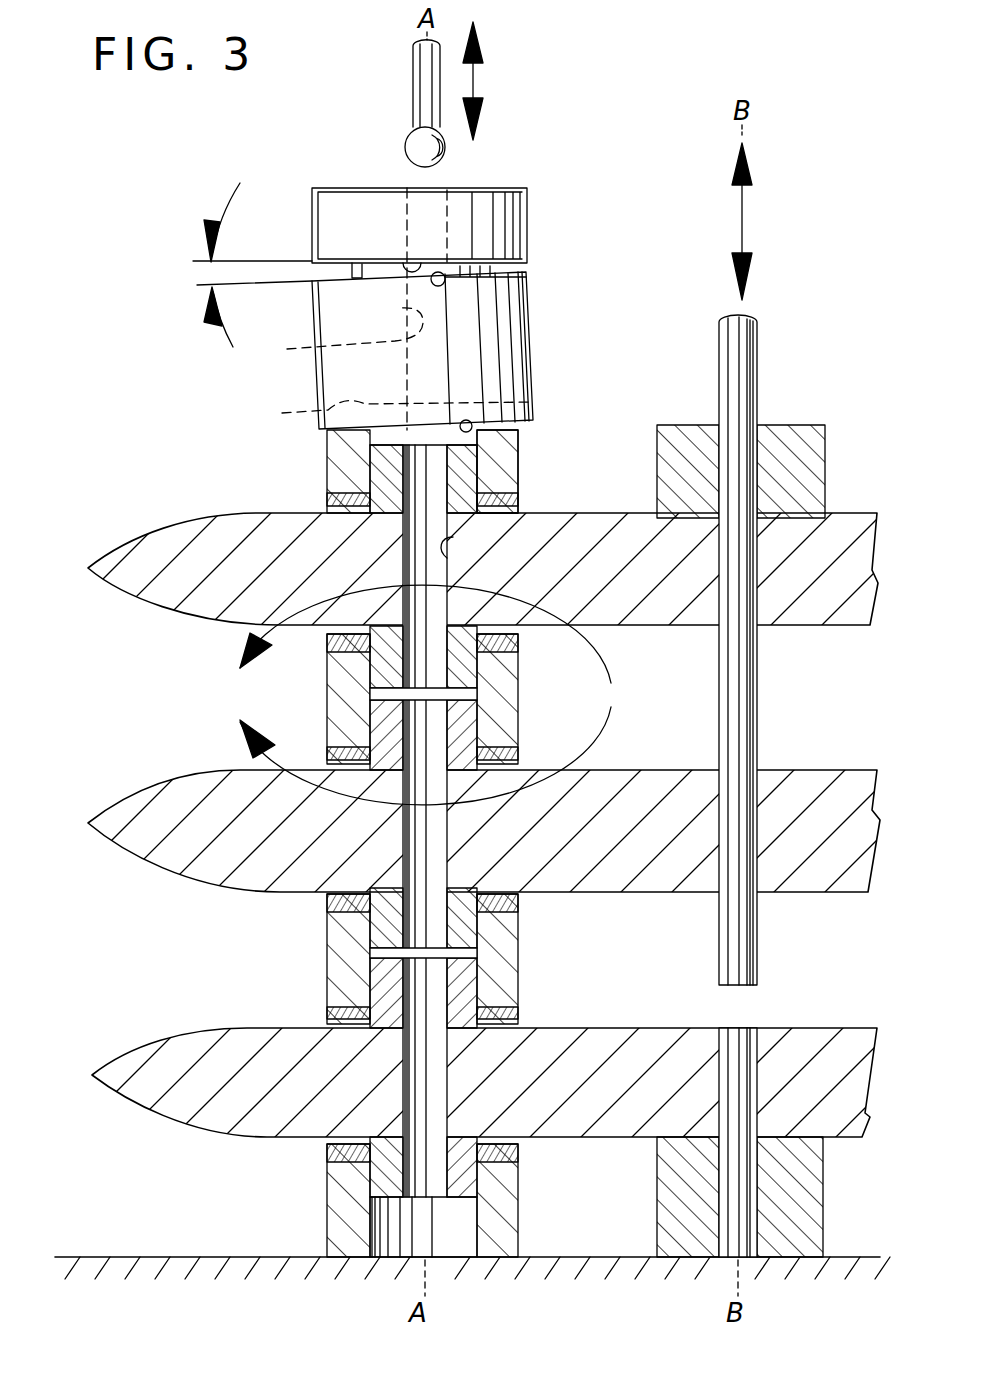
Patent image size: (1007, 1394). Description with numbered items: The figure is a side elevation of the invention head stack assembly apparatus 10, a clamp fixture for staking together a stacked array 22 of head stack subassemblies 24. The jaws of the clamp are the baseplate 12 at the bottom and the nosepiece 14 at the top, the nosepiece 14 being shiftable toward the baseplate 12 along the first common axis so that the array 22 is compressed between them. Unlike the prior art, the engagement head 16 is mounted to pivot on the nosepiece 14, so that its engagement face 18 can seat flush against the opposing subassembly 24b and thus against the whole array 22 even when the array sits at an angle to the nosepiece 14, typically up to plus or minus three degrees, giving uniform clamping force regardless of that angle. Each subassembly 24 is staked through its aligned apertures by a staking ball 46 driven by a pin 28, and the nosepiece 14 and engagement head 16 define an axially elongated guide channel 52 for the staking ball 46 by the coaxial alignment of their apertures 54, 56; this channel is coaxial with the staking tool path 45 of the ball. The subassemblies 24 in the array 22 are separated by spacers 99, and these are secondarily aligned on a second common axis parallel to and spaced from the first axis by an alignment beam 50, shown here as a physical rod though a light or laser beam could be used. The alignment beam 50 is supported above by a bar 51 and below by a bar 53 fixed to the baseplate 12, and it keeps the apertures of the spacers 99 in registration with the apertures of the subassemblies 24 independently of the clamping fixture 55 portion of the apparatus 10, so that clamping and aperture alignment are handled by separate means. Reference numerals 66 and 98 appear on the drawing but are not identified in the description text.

The invention apparatus 10 is at (220, 188).
The baseplate 12 is at (165, 1257).
The nosepiece 14 is at (527, 215).
The engagement head 16 is at (532, 312).
The engagement face 18 is at (477, 425).
The array of head stack subassemblies 22 is at (519, 708).
The head stack subassembly 24 is at (327, 470).
The opposing subassembly 24b is at (520, 448).
The pin 28 is at (413, 103).
The staking tool path 45 is at (453, 537).
The staking ball 46 is at (445, 150).
The alignment beam 50 is at (760, 337).
The bar 51 is at (780, 433).
The guide channel 52 is at (291, 349).
The bar 53 is at (793, 1213).
The aperture 54 is at (405, 263).
The clamping fixture 55 is at (630, 702).
The aperture 56 is at (444, 276).
The slot 66 is at (282, 413).
The bore 98 is at (760, 758).
The spacers 99 is at (850, 528).